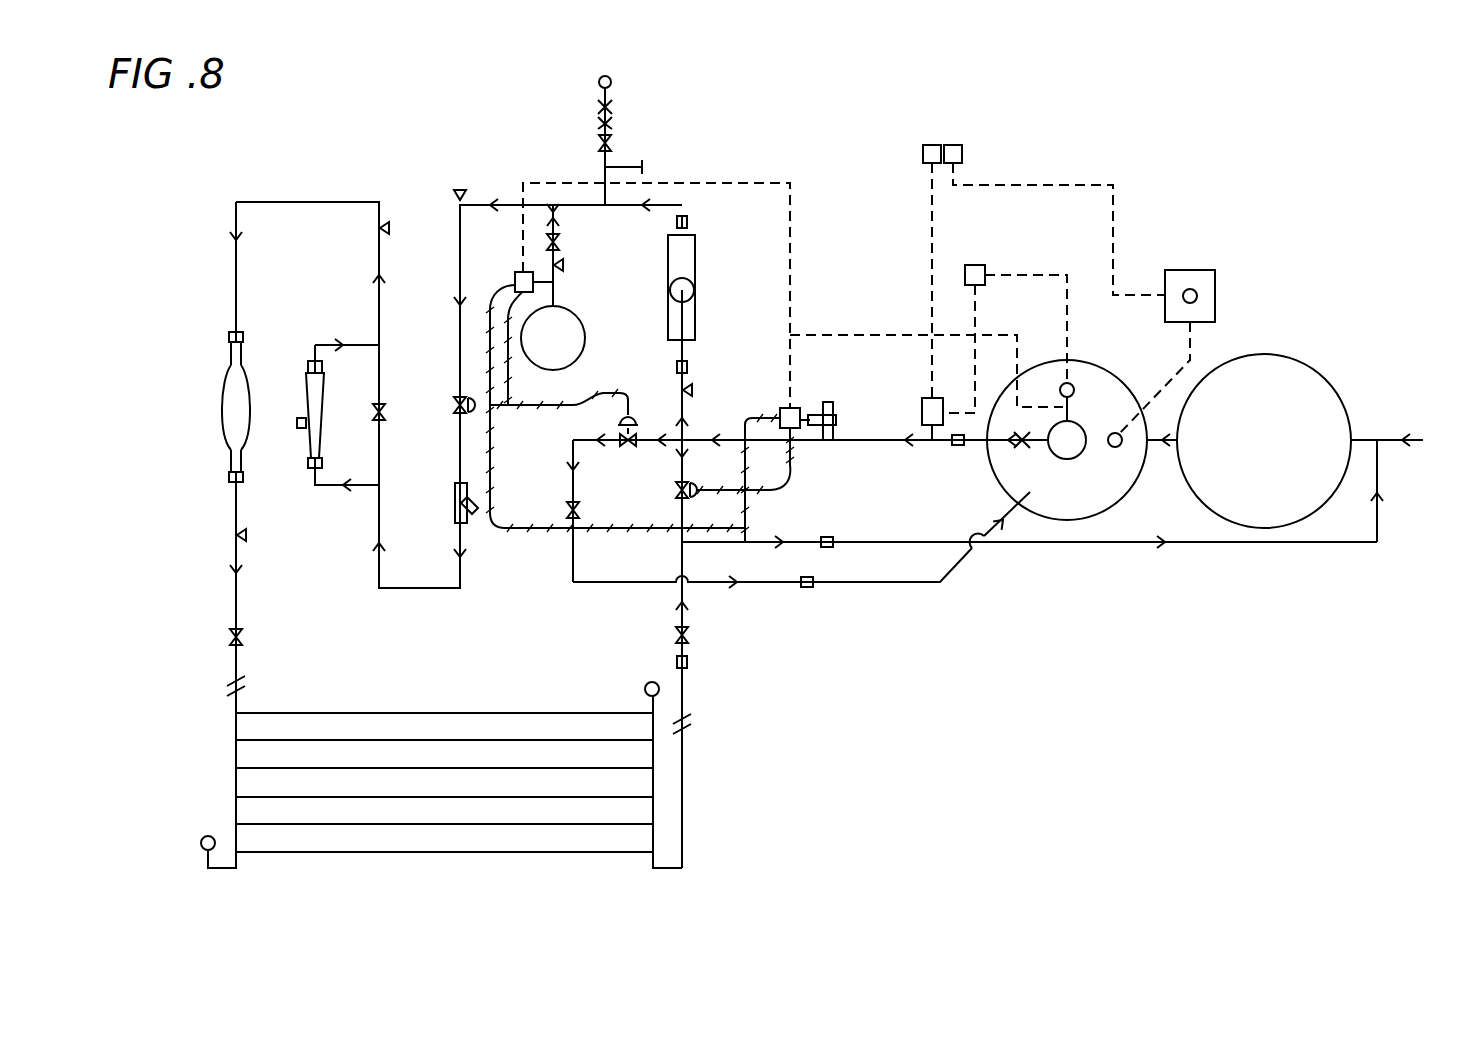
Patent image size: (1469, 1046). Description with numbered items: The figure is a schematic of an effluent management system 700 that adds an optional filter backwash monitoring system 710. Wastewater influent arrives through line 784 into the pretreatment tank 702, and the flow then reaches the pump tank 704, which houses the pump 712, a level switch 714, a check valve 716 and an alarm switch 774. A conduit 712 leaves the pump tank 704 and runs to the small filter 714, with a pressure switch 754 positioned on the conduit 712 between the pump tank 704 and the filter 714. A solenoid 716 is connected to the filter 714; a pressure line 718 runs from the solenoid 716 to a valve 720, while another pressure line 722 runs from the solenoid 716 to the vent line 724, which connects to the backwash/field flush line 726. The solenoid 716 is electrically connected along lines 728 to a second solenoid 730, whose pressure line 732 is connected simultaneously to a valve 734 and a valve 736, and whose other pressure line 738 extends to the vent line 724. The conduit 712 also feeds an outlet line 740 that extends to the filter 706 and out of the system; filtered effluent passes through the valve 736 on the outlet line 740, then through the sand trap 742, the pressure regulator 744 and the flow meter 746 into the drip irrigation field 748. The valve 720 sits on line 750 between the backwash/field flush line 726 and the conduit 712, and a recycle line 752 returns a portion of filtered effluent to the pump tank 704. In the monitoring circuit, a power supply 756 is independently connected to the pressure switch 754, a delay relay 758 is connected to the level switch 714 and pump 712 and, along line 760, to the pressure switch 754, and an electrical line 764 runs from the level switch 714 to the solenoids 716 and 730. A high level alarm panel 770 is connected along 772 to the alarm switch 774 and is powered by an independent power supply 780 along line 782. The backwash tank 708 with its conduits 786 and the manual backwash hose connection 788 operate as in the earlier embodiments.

The effluent management system 700 is at (1180, 565).
The pretreatment tank 702 is at (1330, 395).
The pump tank 704 is at (996, 468).
The filter 706 is at (697, 268).
The backwash tank 708 is at (575, 335).
The filter backwash monitoring system 710 is at (1010, 242).
The conduit 712 is at (1070, 450).
The small filter 714 is at (836, 430).
The solenoid 716 is at (792, 407).
The pressure line 718 is at (778, 488).
The valve 720 is at (672, 490).
The pressure line 722 is at (772, 466).
The vent line 724 is at (748, 530).
The backwash/field flush line 726 is at (1045, 544).
The electrical lines 728 is at (792, 240).
The solenoid 730 is at (498, 300).
The pressure line 732 is at (512, 375).
The valve 734 is at (633, 444).
The valve 736 is at (455, 400).
The pressure line 738 is at (490, 300).
The outlet line 740 is at (300, 202).
The sand trap 742 is at (468, 525).
The pressure regulator 744 is at (381, 418).
The flow meter 746 is at (226, 398).
The drip irrigation field 748 is at (495, 855).
The line 750 is at (684, 812).
The recycle line 752 is at (870, 584).
The pressure switch 754 is at (924, 400).
The power supply 756 is at (924, 150).
The delay relay 758 is at (965, 272).
The line 760 is at (976, 320).
The electrical line 764 is at (900, 335).
The high level alarm panel 770 is at (1216, 280).
The electrical connection 772 is at (1196, 357).
The alarm switch 774 is at (1118, 448).
The independent power supply 780 is at (962, 150).
The line 782 is at (1114, 232).
The line 784 is at (1386, 440).
The conduits 786 is at (562, 266).
The manual backwash hose connection 788 is at (612, 93).